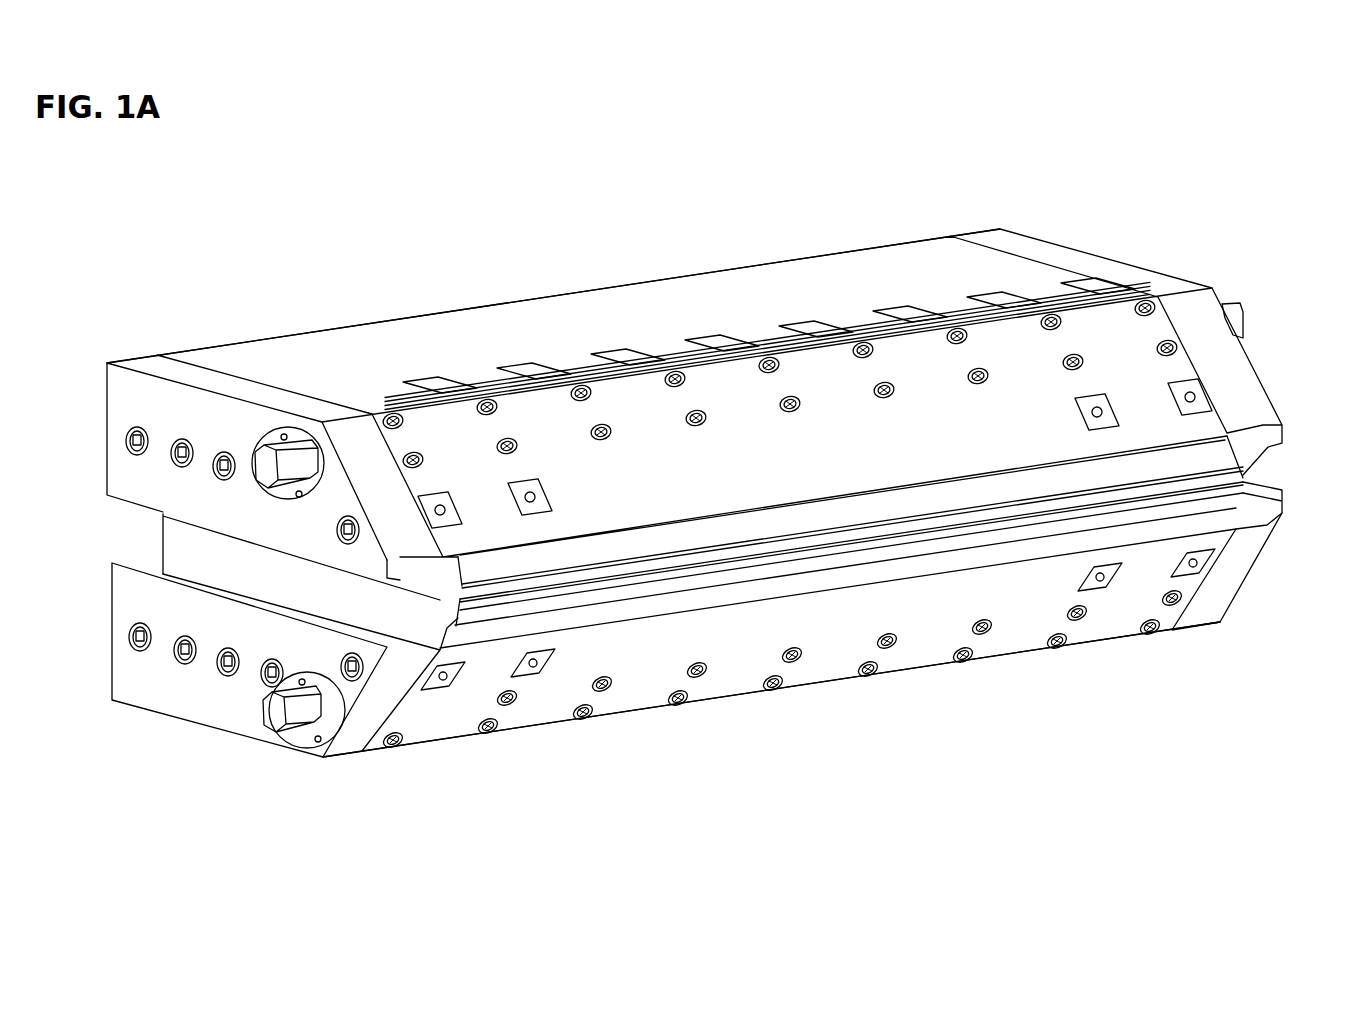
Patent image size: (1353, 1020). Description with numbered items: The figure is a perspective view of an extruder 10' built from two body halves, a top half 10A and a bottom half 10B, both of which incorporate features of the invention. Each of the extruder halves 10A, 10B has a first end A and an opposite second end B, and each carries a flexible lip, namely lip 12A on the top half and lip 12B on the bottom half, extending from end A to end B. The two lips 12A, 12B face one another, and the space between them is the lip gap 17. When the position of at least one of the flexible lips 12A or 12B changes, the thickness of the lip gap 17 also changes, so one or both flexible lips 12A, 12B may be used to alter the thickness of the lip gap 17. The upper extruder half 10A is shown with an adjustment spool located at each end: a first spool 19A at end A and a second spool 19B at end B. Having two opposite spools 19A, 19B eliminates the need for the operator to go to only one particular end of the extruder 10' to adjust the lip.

The extruder 10' is at (663, 442).
The top body half 10A is at (1070, 252).
The bottom body half 10B is at (1234, 599).
The flexible lip 12A is at (1244, 475).
The flexible lip 12B is at (1246, 501).
The lip gap 17 is at (1252, 492).
The first spool 19A is at (270, 447).
The second spool 19B is at (1240, 314).
The first end A is at (132, 362).
The second end B is at (1162, 285).